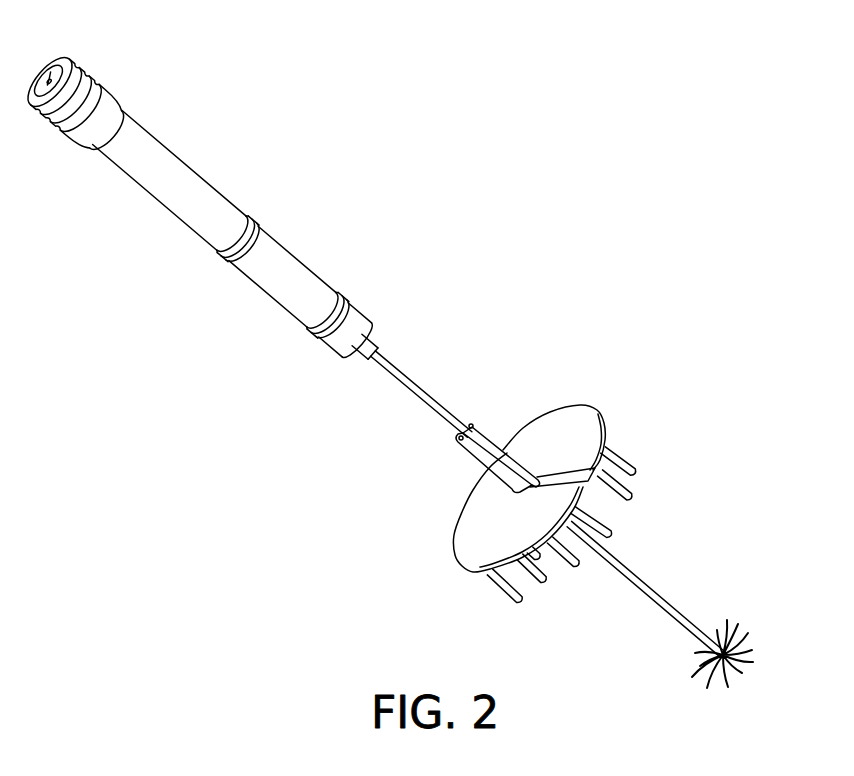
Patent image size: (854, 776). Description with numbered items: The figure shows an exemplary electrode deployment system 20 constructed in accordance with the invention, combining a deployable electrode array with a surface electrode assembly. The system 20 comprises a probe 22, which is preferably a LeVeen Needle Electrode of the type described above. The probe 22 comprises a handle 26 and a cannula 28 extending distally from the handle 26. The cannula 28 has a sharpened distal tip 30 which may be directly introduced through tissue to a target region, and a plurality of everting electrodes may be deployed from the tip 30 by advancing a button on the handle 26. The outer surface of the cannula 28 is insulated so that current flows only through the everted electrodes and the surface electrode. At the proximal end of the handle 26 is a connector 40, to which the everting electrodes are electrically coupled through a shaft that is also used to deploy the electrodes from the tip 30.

The electrode deployment system 20 is at (490, 306).
The probe 22 is at (192, 229).
The handle 26 is at (296, 268).
The cannula 28 is at (408, 394).
The sharpened distal tip 30 is at (740, 637).
The connector 40 is at (58, 64).